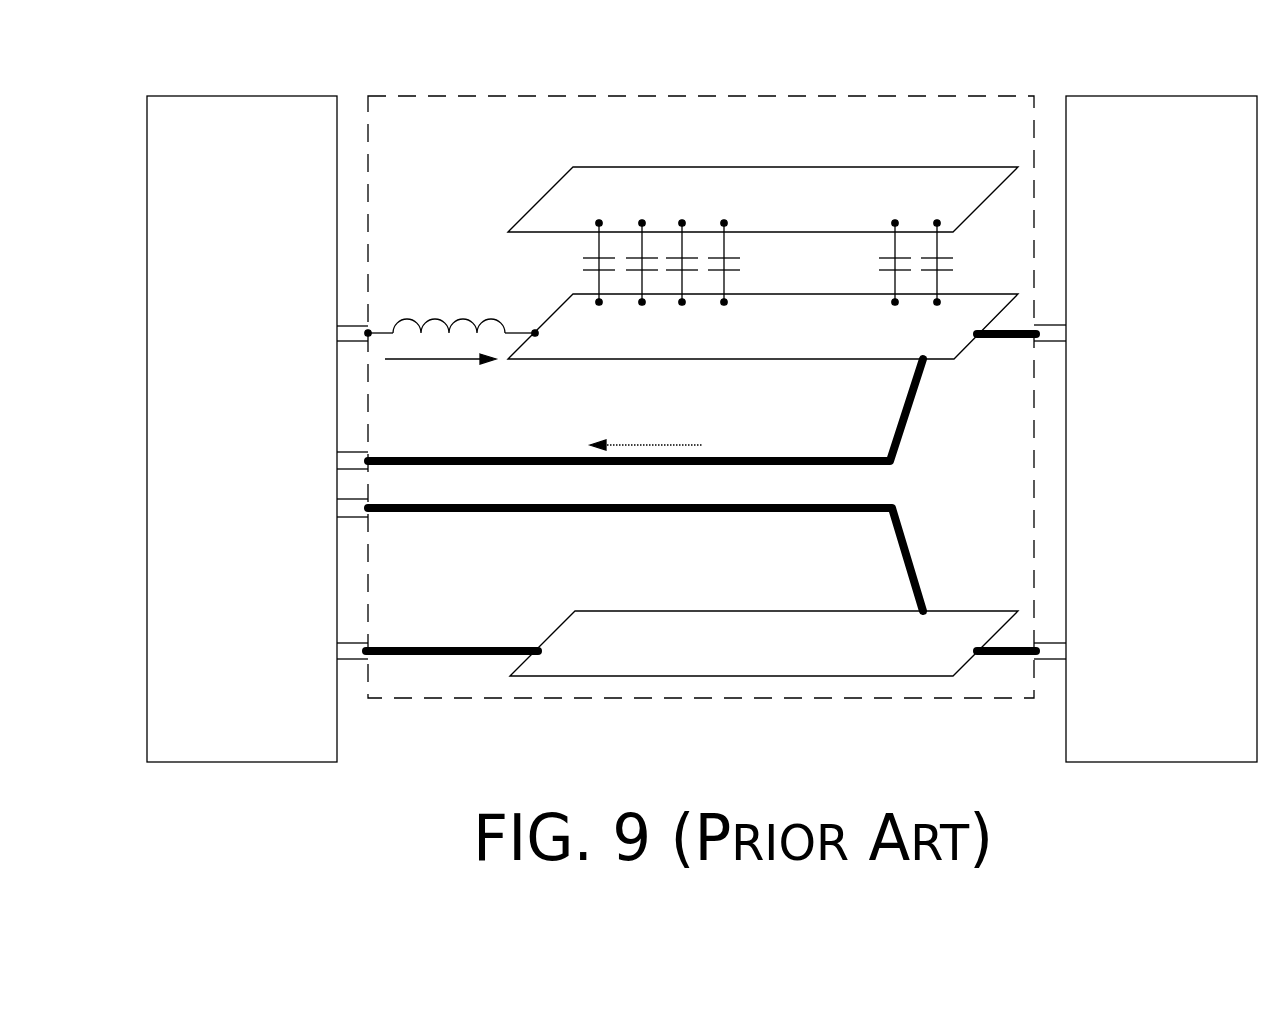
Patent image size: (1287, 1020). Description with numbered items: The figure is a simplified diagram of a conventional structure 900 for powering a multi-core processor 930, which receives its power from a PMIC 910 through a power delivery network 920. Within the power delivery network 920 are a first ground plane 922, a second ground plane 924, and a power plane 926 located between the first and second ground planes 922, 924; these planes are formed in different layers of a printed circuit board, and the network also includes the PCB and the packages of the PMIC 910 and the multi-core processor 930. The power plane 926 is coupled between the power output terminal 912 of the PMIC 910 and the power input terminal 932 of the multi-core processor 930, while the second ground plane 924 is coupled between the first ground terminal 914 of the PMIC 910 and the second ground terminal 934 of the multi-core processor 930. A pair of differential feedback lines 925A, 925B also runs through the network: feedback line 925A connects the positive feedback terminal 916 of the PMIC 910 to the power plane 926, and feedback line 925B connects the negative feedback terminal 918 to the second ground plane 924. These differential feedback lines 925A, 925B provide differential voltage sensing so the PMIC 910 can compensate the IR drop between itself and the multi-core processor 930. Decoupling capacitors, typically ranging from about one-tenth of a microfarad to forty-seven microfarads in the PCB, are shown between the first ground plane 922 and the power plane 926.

The conventional structure 900 is at (728, 40).
The PMIC 910 is at (250, 95).
The power output terminal 912 is at (337, 346).
The first ground terminal 914 is at (337, 665).
The positive feedback terminal 916 is at (337, 450).
The negative feedback terminal 918 is at (337, 519).
The power delivery network 920 is at (858, 95).
The first ground plane 922 is at (955, 166).
The second ground plane 924 is at (955, 609).
The differential feedback line 925A is at (782, 460).
The differential feedback line 925B is at (782, 510).
The power plane 926 is at (955, 292).
The multi-core processor 930 is at (1160, 95).
The power input terminal 932 is at (1066, 347).
The second ground terminal 934 is at (1066, 663).